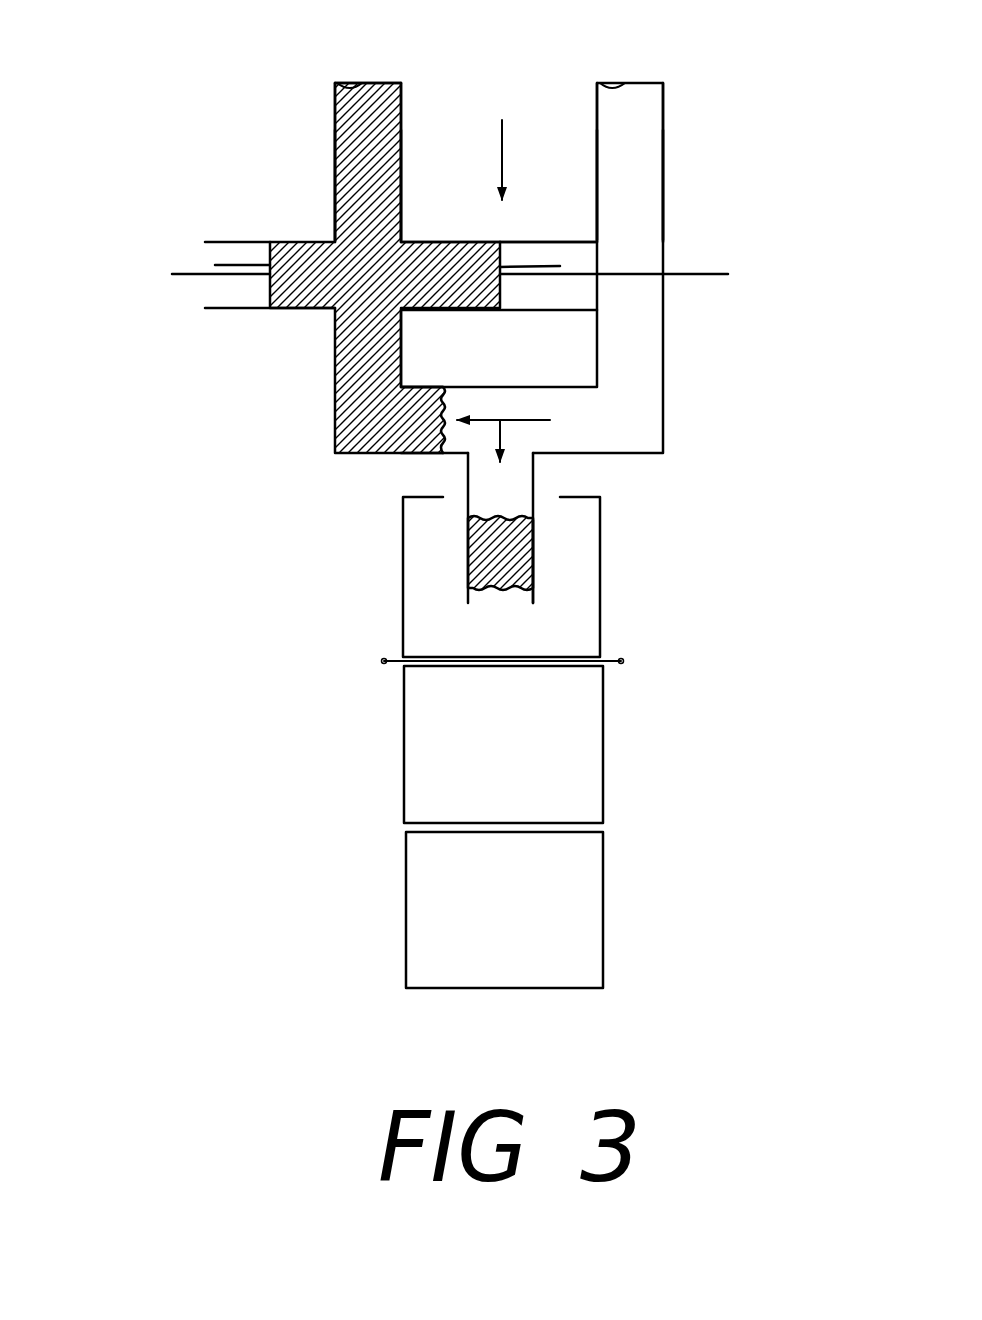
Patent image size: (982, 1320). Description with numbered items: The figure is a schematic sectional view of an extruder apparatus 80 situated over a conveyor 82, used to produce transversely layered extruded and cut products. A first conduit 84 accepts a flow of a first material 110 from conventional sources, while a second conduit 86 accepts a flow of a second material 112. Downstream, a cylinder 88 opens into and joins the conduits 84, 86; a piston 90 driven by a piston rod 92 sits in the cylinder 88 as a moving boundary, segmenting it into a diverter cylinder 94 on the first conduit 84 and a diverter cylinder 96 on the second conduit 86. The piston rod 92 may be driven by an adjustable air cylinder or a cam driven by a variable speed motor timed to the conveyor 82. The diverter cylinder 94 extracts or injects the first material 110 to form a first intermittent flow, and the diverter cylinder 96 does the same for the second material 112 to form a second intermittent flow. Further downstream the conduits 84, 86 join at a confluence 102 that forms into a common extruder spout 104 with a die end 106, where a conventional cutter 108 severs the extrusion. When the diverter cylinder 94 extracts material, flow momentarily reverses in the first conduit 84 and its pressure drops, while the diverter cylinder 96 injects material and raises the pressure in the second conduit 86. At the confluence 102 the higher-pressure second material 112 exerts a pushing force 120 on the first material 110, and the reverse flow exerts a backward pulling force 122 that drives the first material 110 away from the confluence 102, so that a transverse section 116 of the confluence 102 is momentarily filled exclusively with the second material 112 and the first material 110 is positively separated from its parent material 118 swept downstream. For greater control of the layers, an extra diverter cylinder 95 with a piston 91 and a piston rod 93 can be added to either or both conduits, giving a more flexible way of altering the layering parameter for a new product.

The extruder apparatus 80 is at (698, 394).
The conveyor 82 is at (620, 773).
The first conduit 84 is at (333, 117).
The second conduit 86 is at (663, 117).
The cylinder 88 is at (501, 137).
The piston 90 is at (560, 266).
The piston 91 is at (240, 265).
The piston rod 92 is at (685, 275).
The piston rod 93 is at (197, 277).
The diverter cylinder 94 is at (462, 240).
The diverter cylinder 95 is at (298, 310).
The diverter cylinder 96 is at (538, 240).
The confluence 102 is at (483, 400).
The extruder spout 104 is at (468, 505).
The die end 106 is at (535, 597).
The cutter 108 is at (622, 662).
The first material 110 is at (363, 190).
The second material 112 is at (635, 187).
The transverse section 116 is at (518, 475).
The parent material 118 is at (510, 557).
The pushing force 120 is at (522, 420).
The backward pulling force 122 is at (425, 420).